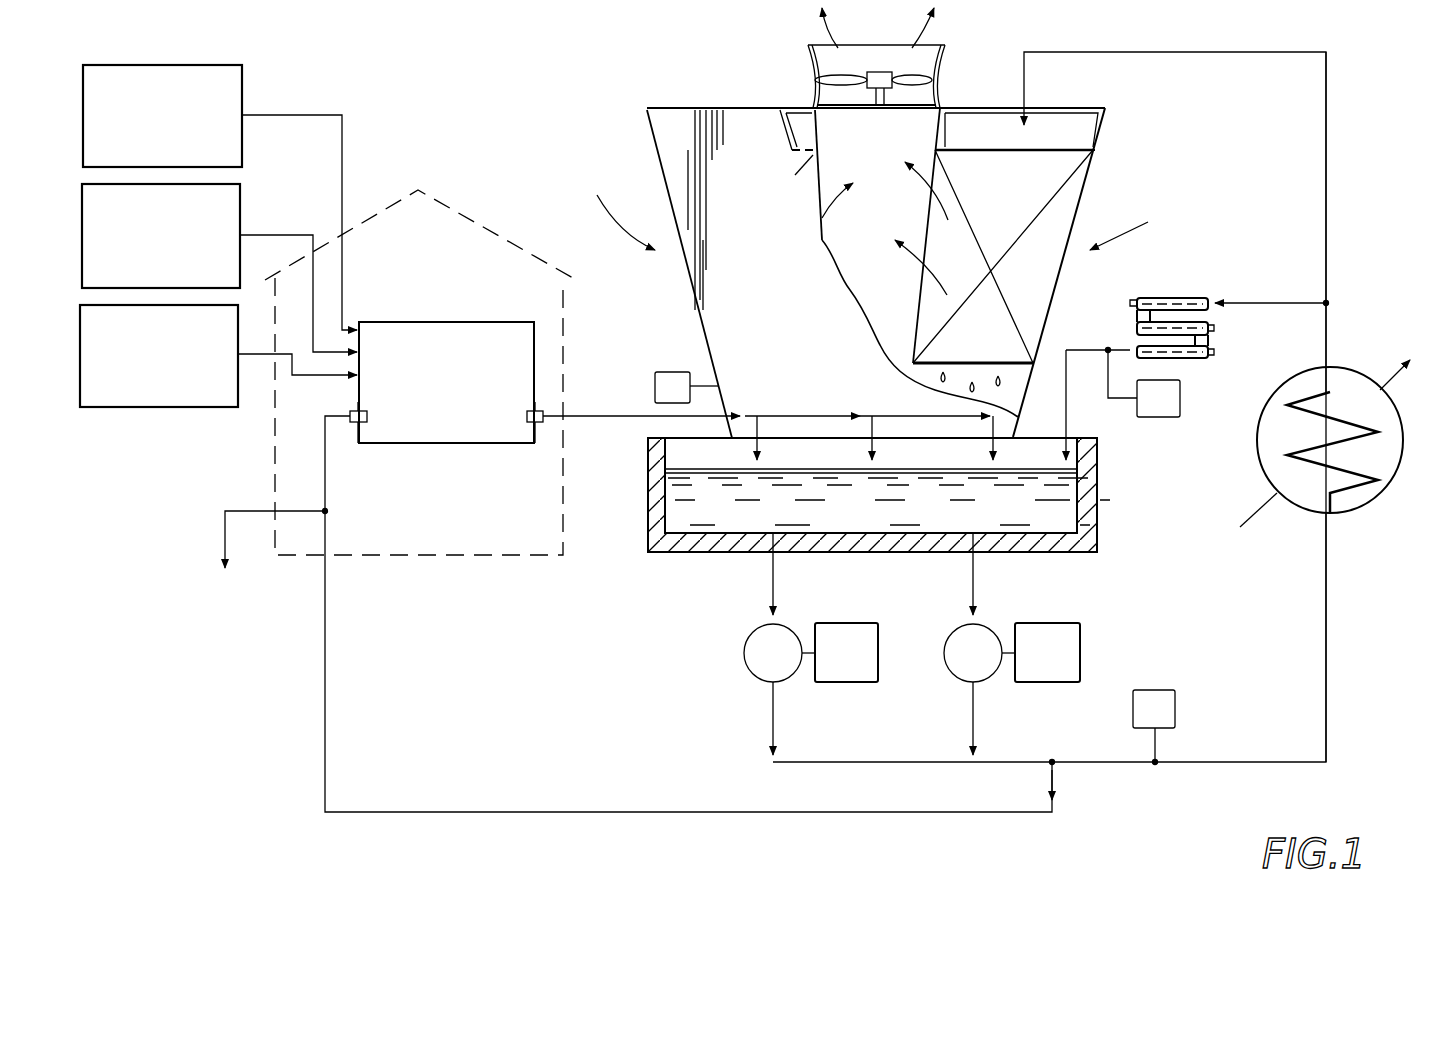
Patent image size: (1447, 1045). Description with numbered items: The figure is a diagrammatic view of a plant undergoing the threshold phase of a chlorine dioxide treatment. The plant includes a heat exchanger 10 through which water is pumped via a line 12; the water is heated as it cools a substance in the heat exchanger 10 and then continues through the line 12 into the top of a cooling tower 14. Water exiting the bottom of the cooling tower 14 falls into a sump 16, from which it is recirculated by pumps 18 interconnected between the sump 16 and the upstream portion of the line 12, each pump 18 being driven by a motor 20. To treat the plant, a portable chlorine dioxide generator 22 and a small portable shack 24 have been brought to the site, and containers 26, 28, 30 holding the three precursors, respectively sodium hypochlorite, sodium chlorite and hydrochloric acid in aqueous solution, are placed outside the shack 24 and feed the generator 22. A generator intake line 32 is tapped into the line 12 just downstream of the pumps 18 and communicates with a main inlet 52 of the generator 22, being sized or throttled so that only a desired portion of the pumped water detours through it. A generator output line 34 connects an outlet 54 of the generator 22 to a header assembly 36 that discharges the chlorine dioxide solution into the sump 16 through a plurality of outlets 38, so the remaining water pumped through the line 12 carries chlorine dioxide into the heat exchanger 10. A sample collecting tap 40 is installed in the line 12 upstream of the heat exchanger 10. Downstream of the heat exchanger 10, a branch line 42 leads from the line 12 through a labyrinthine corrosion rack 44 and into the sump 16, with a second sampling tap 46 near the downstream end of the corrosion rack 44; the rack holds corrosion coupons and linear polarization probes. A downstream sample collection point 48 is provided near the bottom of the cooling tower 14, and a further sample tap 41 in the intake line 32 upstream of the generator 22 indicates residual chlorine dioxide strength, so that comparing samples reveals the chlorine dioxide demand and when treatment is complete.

The heat exchanger 10 is at (1393, 475).
The line 12 is at (1327, 145).
The cooling tower 14 is at (985, 108).
The sump 16 is at (648, 530).
The pumps 18 is at (748, 673).
The motor 20 is at (850, 623).
The portable chlorine dioxide generator 22 is at (440, 322).
The portable shack 24 is at (467, 210).
The container 26 is at (238, 64).
The container 28 is at (242, 205).
The container 30 is at (165, 408).
The generator intake line 32 is at (495, 812).
The generator output line 34 is at (605, 420).
The header assembly 36 is at (823, 416).
The outlets 38 is at (757, 430).
The sample collecting tap 40 is at (1175, 705).
The sample tap 41 is at (244, 510).
The branch line 42 is at (1272, 303).
The labyrinthine corrosion rack 44 is at (1175, 298).
The second sampling tap 46 is at (1165, 418).
The downstream sample collection point 48 is at (655, 378).
The main inlet 52 is at (363, 422).
The outlet 54 is at (528, 422).